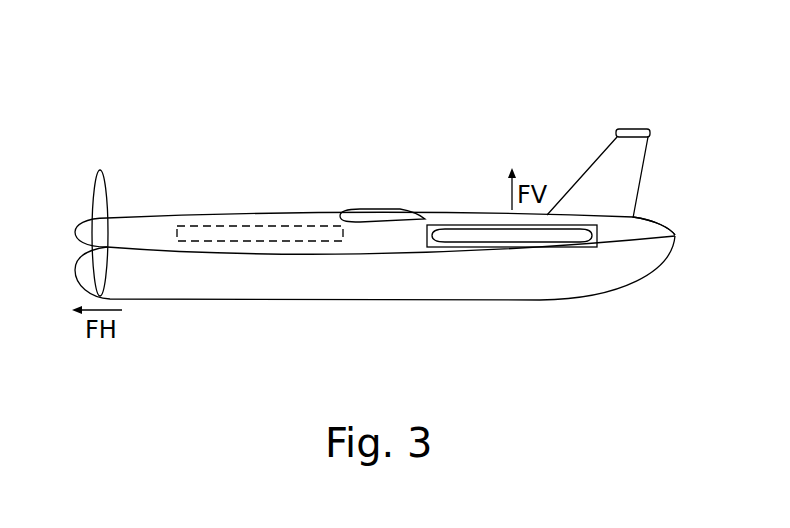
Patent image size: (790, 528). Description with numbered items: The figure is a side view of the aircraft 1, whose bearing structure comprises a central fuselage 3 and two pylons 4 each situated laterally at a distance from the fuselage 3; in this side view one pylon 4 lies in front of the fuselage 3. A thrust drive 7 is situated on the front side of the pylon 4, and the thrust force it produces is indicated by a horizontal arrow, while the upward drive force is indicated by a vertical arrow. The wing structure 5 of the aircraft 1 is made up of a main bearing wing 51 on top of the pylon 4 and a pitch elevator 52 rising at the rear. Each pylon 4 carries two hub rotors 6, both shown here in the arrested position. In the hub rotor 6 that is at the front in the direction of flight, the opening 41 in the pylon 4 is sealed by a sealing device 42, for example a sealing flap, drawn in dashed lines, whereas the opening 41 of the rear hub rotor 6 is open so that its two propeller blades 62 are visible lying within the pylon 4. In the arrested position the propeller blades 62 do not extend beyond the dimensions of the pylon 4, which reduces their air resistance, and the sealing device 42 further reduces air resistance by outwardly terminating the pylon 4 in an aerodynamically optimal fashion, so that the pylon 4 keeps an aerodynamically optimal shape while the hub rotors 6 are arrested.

The aircraft 1 is at (128, 66).
The fuselage 3 is at (277, 300).
The pylon 4 is at (653, 218).
The opening 41 is at (587, 252).
The sealing device 42 is at (253, 242).
The wing structure 5 is at (510, 140).
The main bearing wing 51 is at (372, 210).
The pitch elevator 52 is at (628, 130).
The hub rotor 6 is at (478, 247).
The propeller blades 62 is at (513, 236).
The thrust drive 7 is at (100, 170).